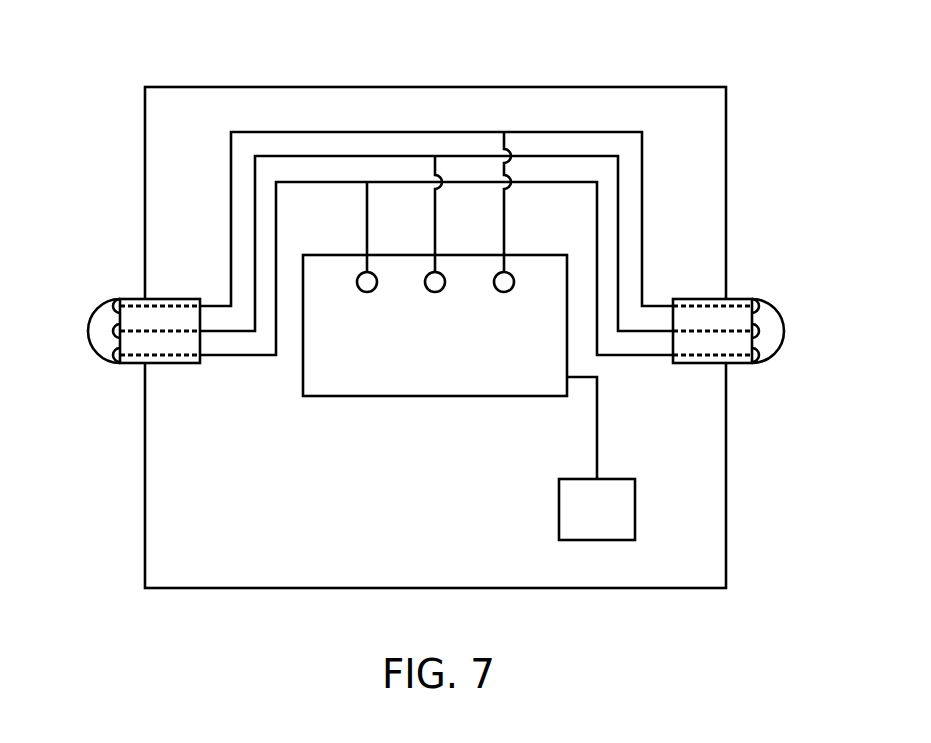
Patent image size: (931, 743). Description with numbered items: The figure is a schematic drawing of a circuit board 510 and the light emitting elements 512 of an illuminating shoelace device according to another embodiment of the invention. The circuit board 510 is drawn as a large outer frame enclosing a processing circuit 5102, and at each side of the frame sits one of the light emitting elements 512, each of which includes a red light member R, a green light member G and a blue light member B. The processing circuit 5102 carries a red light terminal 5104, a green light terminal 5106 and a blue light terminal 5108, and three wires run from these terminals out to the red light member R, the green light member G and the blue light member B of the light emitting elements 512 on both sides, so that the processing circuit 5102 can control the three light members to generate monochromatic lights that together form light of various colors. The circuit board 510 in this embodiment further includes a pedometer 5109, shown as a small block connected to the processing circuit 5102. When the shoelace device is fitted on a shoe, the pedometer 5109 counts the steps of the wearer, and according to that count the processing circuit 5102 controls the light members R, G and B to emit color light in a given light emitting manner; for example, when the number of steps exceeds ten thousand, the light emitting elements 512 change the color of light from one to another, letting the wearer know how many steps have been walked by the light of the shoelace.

The circuit board 510 is at (426, 87).
The light emitting elements 512 is at (127, 299).
The processing circuit 5102 is at (313, 397).
The red light terminal 5104 is at (367, 292).
The green light terminal 5106 is at (435, 292).
The blue light terminal 5108 is at (504, 292).
The pedometer 5109 is at (559, 512).
The blue light member B is at (113, 306).
The green light member G is at (112, 331).
The red light member R is at (113, 355).